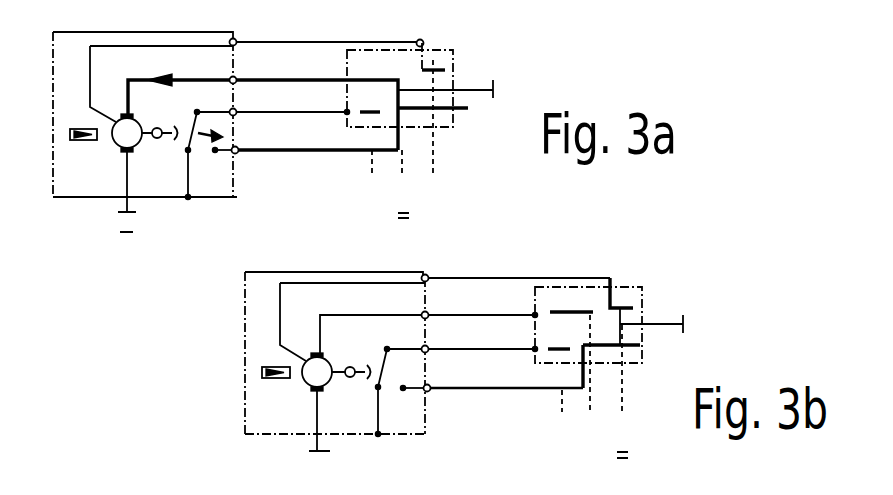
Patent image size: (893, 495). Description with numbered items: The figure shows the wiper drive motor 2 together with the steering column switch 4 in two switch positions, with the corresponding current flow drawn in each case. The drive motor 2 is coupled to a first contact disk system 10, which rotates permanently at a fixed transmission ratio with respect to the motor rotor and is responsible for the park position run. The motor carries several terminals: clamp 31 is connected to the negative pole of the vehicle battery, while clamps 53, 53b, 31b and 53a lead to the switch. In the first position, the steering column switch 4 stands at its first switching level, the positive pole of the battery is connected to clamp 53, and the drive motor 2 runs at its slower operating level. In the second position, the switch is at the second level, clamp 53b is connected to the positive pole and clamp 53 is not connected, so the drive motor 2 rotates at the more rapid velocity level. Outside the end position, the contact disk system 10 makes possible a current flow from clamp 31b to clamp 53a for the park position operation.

In FIG. 3A, the drive motor 2 is at (113, 146).
In FIG. 3B, the drive motor 2 is at (305, 381).
In FIG. 3A, the steering column switch 4 is at (470, 52).
In FIG. 3B, the steering column switch 4 is at (657, 290).
In FIG. 3A, the first contact disk system 10 is at (212, 168).
In FIG. 3B, the first contact disk system 10 is at (420, 405).
In FIG. 3A, the clamp 31 is at (171, 192).
In FIG. 3B, the clamp 31 is at (353, 429).
In FIG. 3A, the clamp 31b is at (288, 101).
In FIG. 3B, the clamp 31b is at (478, 339).
In FIG. 3A, the clamp 53 is at (263, 101).
In FIG. 3B, the clamp 53 is at (456, 323).
In FIG. 3A, the clamp 53a is at (305, 139).
In FIG. 3B, the clamp 53a is at (491, 374).
In FIG. 3A, the clamp 53b is at (327, 30).
In FIG. 3B, the clamp 53b is at (528, 279).